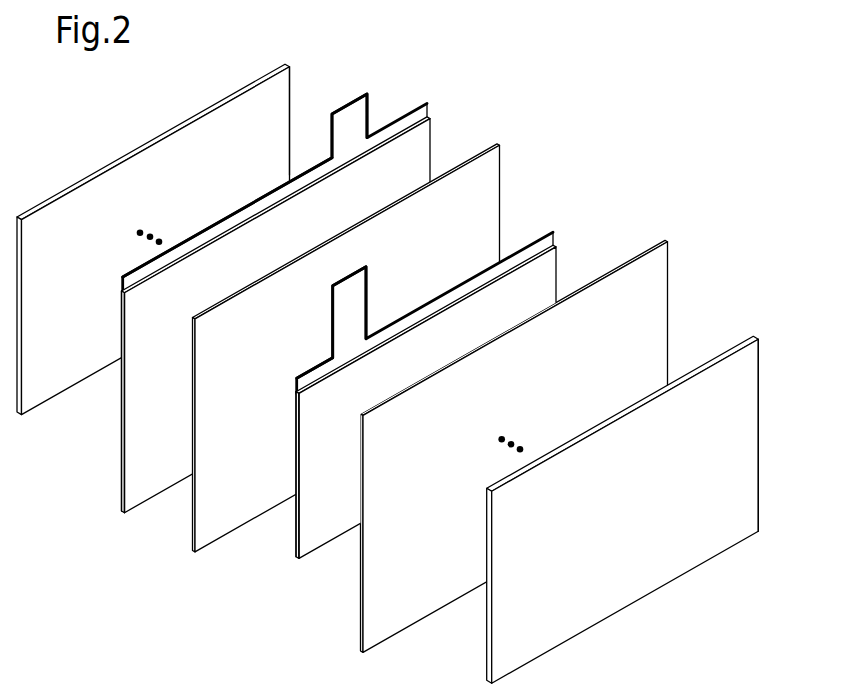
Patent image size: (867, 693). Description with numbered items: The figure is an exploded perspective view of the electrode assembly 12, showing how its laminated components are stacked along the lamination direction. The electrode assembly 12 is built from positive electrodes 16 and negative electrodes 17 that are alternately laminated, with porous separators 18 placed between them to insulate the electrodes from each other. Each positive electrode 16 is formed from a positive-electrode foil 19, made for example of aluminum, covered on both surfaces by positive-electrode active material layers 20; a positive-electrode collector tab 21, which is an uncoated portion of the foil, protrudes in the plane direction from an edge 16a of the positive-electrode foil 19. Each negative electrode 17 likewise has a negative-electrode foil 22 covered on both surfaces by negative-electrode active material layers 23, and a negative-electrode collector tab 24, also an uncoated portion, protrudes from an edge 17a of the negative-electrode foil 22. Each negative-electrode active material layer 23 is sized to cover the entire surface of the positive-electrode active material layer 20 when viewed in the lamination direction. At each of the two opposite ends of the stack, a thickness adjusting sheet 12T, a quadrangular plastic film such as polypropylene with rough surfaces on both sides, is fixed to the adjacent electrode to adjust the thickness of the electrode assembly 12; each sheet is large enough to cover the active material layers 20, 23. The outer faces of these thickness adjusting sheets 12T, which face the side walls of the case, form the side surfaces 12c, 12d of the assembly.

The electrode assembly 12 is at (625, 145).
The side surface 12c is at (112, 166).
The side surface 12d is at (655, 583).
The thickness adjusting sheet 12T is at (289, 77).
The positive electrode 16 is at (425, 421).
The edge of the positive-electrode foil 16a is at (424, 312).
The negative electrode 17 is at (276, 317).
The edge of the negative-electrode foil 17a is at (275, 179).
The separator 18 is at (498, 188).
The positive-electrode foil 19 is at (312, 378).
The positive-electrode active material layer 20 is at (295, 535).
The positive-electrode collector tab 21 is at (350, 288).
The negative-electrode foil 22 is at (218, 226).
The negative-electrode active material layer 23 is at (120, 488).
The negative-electrode collector tab 24 is at (350, 112).